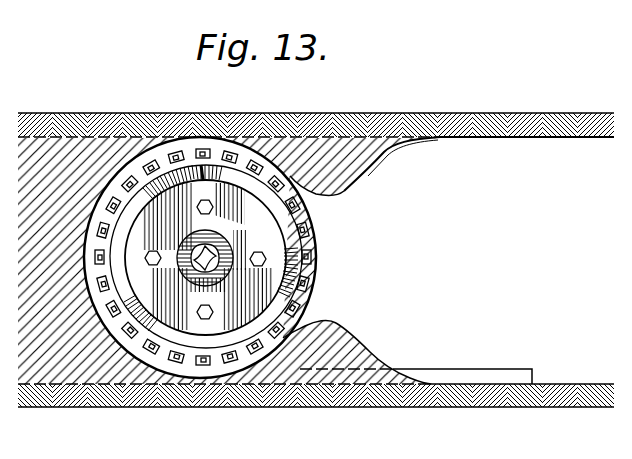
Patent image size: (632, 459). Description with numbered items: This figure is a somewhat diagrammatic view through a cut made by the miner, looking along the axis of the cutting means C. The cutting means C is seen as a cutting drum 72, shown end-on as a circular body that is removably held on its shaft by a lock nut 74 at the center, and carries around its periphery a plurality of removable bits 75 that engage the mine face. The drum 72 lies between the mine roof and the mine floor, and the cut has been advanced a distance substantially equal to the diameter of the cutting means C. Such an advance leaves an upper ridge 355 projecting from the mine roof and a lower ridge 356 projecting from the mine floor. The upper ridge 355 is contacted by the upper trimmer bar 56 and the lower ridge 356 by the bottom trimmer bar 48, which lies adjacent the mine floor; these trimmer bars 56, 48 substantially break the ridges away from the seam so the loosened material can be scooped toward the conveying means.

The bottom trimmer bar 48 is at (460, 372).
The upper trimmer bar 56 is at (393, 158).
The cutting drum 72 is at (316, 250).
The lock nut 74 is at (229, 249).
The removable bits 75 is at (307, 305).
The upper ridges 355 is at (343, 190).
The lower ridges 356 is at (352, 338).
The cutting means C is at (354, 237).